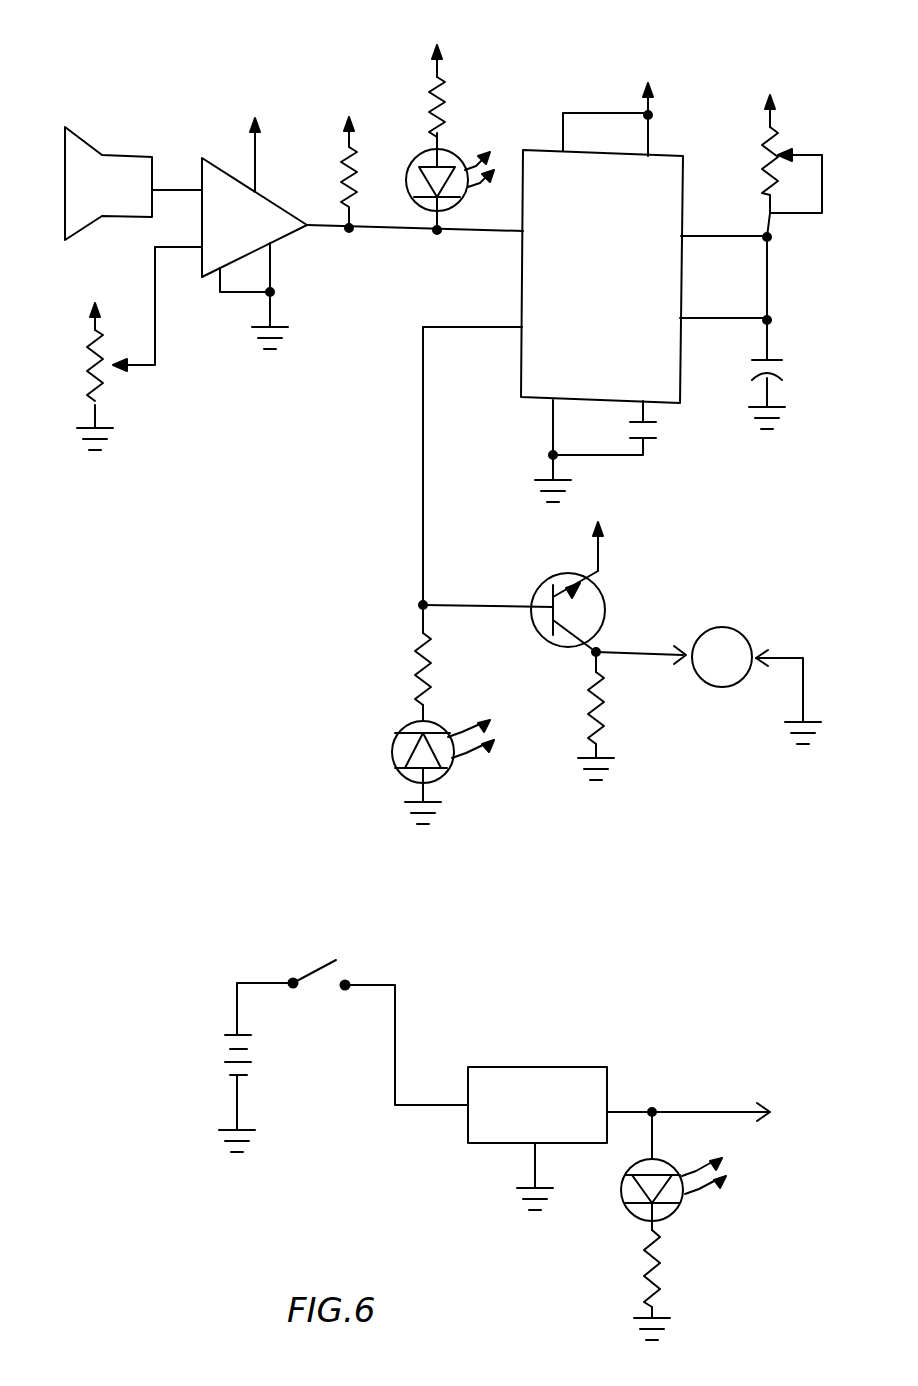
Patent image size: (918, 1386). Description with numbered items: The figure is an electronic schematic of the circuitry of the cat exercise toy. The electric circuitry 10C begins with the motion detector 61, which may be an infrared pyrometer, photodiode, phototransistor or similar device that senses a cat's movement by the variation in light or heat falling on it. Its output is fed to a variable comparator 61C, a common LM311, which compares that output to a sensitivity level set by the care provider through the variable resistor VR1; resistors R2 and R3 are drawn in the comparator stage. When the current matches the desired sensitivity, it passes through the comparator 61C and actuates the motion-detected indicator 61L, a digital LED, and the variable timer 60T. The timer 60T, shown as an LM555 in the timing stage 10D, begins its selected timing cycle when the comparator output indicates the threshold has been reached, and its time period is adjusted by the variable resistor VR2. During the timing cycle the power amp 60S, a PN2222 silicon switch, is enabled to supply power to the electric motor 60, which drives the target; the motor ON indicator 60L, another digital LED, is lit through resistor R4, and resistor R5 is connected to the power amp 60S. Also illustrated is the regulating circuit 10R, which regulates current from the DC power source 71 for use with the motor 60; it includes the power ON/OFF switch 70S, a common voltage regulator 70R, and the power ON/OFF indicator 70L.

The motion detector 61 is at (66, 128).
The variable comparator 61C is at (216, 158).
The motion-detected indicator 61L is at (460, 156).
The pull-up resistor R2 is at (345, 150).
The LED current limiting resistor R3 is at (433, 112).
The variable resistor VR1 is at (90, 372).
The electric circuitry 10C is at (300, 536).
The delay timer circuit 10D is at (612, 38).
The variable timer 60T is at (600, 110).
The variable resistor VR2 is at (782, 152).
The power amp 60S is at (610, 595).
The electric motor 60 is at (742, 626).
The LED current limiting resistor R4 is at (415, 645).
The motor ON indicator 60L is at (382, 758).
The emitter resistor R5 is at (590, 712).
The regulating circuit 10R is at (375, 1168).
The DC power source 71 is at (216, 1042).
The power ON/OFF switch 70S is at (290, 971).
The voltage regulator 70R is at (570, 1068).
The power ON/OFF indicator 70L is at (665, 1157).